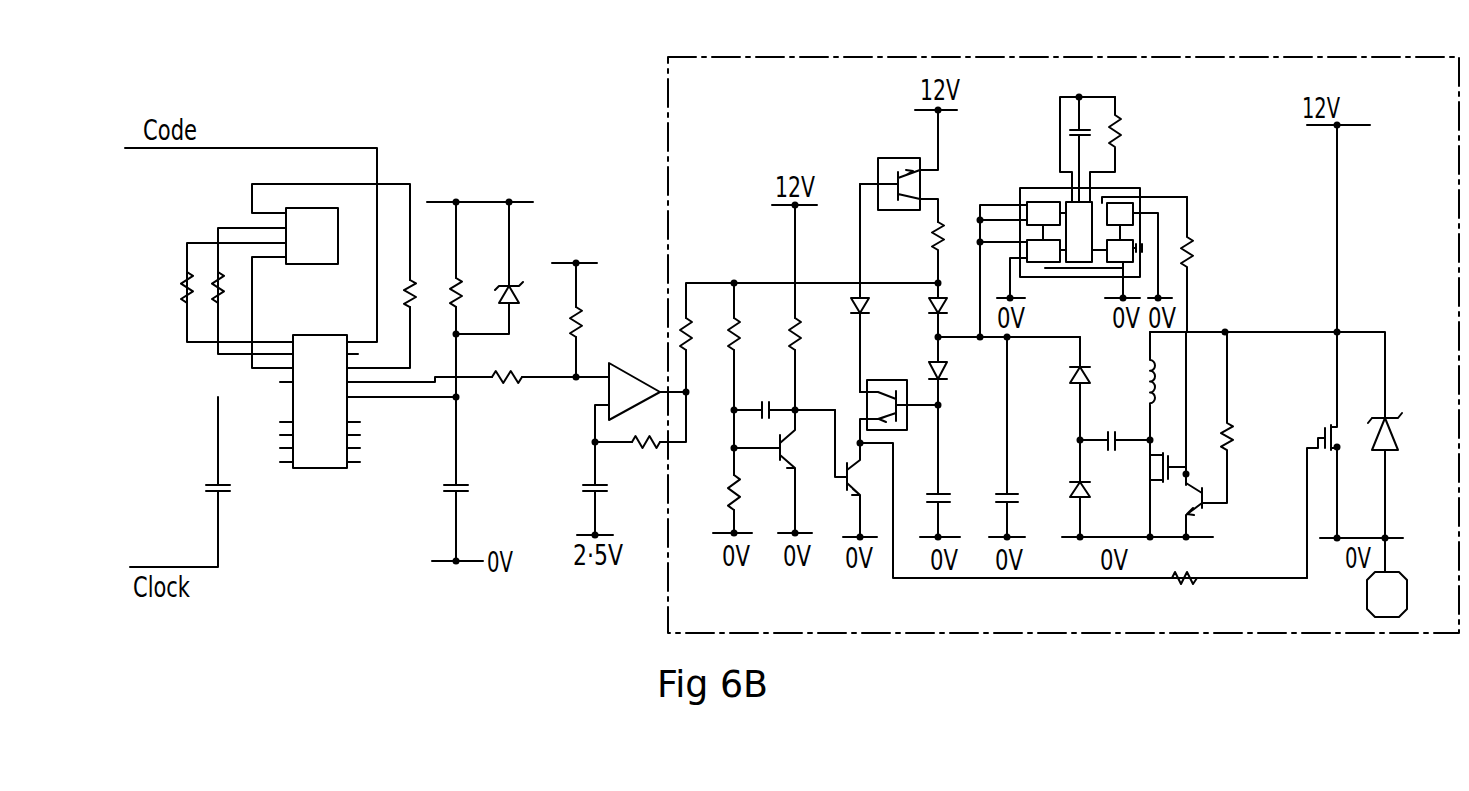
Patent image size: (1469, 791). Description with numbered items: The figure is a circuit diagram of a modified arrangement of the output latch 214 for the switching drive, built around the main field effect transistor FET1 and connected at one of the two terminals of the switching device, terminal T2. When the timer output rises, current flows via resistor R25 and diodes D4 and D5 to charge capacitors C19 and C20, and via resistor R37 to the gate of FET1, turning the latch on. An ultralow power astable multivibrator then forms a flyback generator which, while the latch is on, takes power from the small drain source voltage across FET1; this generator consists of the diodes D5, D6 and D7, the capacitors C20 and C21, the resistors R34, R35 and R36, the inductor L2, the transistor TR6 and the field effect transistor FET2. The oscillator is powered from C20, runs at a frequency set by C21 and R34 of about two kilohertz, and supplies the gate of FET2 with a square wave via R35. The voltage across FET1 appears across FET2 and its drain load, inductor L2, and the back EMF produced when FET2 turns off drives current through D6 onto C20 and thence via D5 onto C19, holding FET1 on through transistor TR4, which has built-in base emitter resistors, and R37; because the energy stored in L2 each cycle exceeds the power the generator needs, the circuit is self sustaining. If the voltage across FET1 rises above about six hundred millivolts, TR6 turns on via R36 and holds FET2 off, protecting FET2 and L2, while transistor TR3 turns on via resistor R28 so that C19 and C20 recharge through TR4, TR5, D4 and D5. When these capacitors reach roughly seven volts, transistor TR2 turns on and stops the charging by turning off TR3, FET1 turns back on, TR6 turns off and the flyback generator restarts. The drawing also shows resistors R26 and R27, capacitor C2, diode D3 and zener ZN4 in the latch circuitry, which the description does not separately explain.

The output latch 214 is at (1087, 57).
The resistor R25 is at (707, 337).
The resistor R26 is at (722, 300).
The resistor R27 is at (731, 471).
The resistor R28 is at (788, 333).
The resistor R34 is at (1137, 125).
The resistor R35 is at (1208, 264).
The resistor R36 is at (1238, 417).
The resistor R37 is at (1184, 594).
The capacitor C2 is at (1115, 428).
The capacitor C19 is at (946, 491).
The capacitor C20 is at (1014, 491).
The capacitor C21 is at (1072, 138).
The diode D3 is at (845, 288).
The diode D4 is at (923, 310).
The diode D5 is at (957, 371).
The diode D6 is at (1066, 388).
The diode D7 is at (1097, 488).
The transistor TR2 is at (784, 472).
The transistor TR3 is at (843, 489).
The transistor TR4 is at (890, 370).
The transistor TR5 is at (892, 148).
The transistor TR6 is at (1212, 520).
The field effect transistor FET1 is at (1316, 432).
The field effect transistor FET2 is at (1196, 469).
The inductor L2 is at (1133, 386).
The zener diode ZN4 is at (1409, 475).
The terminal T2 is at (1382, 599).